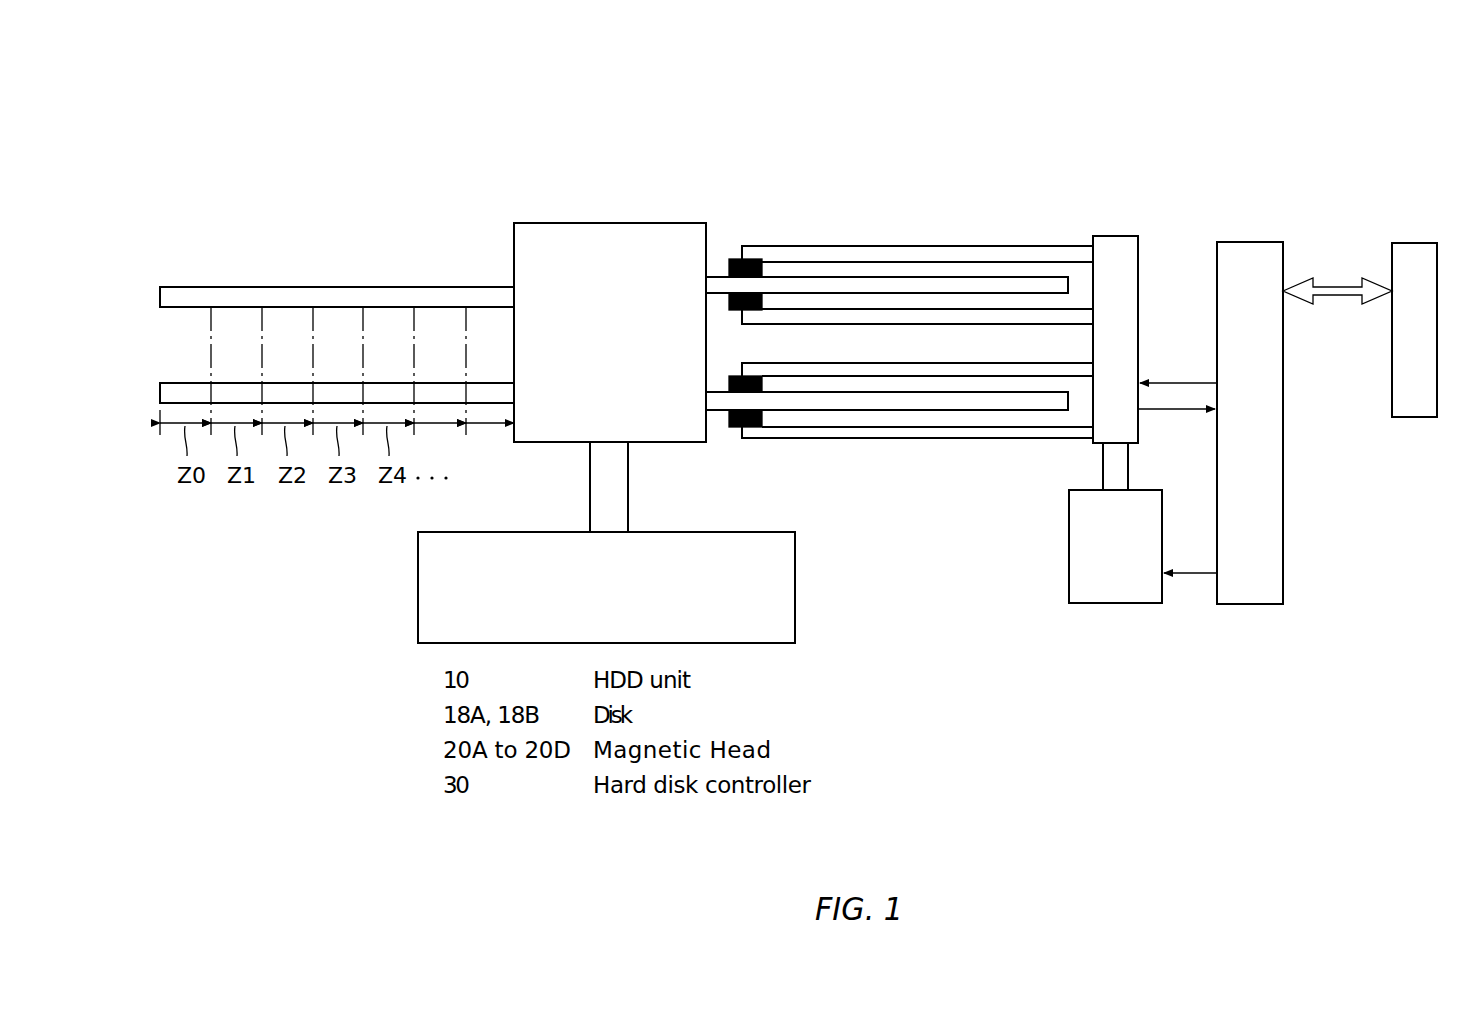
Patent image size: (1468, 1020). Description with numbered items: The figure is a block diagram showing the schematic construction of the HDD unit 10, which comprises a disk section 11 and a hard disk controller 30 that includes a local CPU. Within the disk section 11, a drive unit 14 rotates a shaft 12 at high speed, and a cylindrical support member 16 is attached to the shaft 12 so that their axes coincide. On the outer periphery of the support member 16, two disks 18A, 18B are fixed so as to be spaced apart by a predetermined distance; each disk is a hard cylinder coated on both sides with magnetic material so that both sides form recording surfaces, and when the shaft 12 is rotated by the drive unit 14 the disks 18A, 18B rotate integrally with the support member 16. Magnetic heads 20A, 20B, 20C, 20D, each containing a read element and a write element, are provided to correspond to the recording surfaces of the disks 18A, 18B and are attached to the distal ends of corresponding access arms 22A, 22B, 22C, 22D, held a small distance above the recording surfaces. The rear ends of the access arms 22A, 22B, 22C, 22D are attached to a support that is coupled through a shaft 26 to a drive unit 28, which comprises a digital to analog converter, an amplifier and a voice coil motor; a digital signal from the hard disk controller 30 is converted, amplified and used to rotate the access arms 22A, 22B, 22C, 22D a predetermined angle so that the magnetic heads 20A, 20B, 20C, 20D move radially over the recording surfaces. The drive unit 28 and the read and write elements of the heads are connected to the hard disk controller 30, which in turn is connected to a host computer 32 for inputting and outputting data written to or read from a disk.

The HDD unit 10 is at (791, 176).
The disk section 11 is at (849, 656).
The shaft 12 is at (628, 462).
The drive unit 14 is at (795, 582).
The cylindrical support member 16 is at (692, 223).
The disk 18A is at (160, 297).
The disk 18B is at (160, 393).
The magnetic head 20A is at (729, 268).
The magnetic head 20B is at (729, 300).
The magnetic head 20C is at (729, 385).
The magnetic head 20D is at (729, 418).
The access arm 22A is at (918, 247).
The access arm 22B is at (782, 324).
The access arm 22C is at (935, 363).
The access arm 22D is at (910, 439).
The shaft 26 is at (1128, 466).
The drive unit 28 is at (1110, 603).
The hard disk controller 30 is at (1250, 604).
The host computer 32 is at (1410, 417).